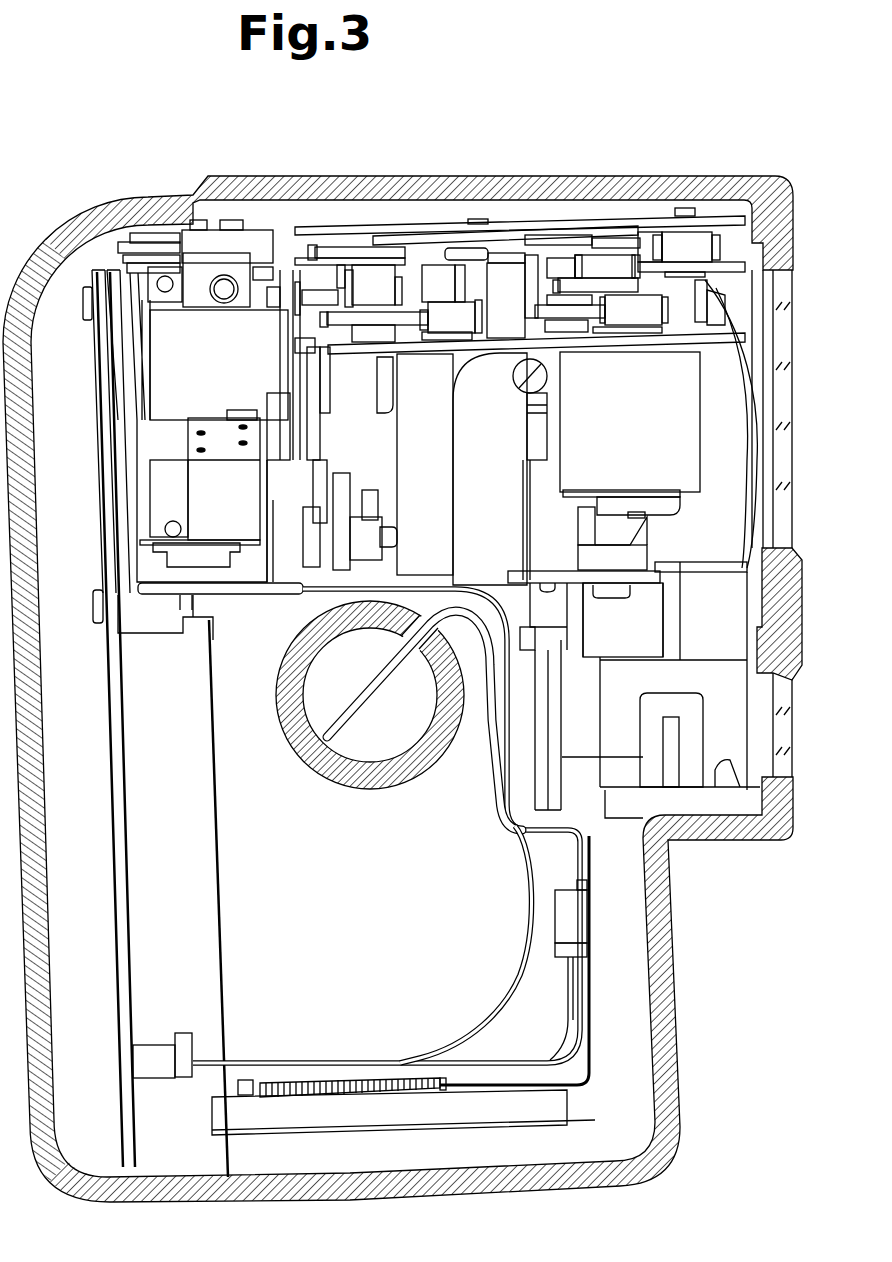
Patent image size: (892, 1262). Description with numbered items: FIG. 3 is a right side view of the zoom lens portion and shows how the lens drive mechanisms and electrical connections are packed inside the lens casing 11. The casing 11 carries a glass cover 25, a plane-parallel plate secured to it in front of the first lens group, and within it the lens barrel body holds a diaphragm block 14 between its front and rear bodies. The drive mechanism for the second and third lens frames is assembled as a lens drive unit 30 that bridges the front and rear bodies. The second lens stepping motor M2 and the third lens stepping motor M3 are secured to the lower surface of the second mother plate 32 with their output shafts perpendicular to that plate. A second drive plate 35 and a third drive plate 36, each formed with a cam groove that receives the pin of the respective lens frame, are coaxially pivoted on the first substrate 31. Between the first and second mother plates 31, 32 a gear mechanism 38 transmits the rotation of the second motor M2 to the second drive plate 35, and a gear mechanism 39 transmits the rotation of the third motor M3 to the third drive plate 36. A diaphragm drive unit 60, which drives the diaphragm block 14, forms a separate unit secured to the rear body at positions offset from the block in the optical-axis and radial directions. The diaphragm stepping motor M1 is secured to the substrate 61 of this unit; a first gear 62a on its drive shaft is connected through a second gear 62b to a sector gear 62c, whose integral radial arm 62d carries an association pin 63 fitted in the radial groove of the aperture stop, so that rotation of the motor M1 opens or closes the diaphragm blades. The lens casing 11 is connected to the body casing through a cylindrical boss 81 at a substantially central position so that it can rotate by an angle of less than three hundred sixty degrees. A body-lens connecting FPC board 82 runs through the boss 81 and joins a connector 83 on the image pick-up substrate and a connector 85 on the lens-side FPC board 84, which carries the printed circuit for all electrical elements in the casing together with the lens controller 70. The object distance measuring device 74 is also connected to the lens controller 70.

The lens casing 11 is at (663, 1013).
The diaphragm block 14 is at (458, 285).
The glass cover (plane-parallel plate) 25 is at (785, 542).
The lens drive unit 30 is at (432, 220).
The first substrate (first mother plate) 31 is at (605, 223).
The second mother plate (substrate) 32 is at (733, 338).
The second drive plate 35 is at (402, 237).
The third drive plate 36 is at (340, 248).
The gear mechanism 38 is at (644, 247).
The gear mechanism 39 is at (312, 278).
The diaphragm drive unit 60 is at (168, 453).
The substrate 61 is at (293, 398).
The first gear 62a is at (318, 357).
The second gear 62b is at (320, 562).
The sector gear 62c is at (345, 582).
The radial arm 62d is at (417, 523).
The association pin 63 is at (330, 585).
The lens controller (CPU) 70 is at (372, 1070).
The object distance measuring device 74 is at (722, 742).
The cylindrical boss 81 is at (388, 789).
The body-lens connecting FPC board 82 is at (500, 1053).
The connector 83 is at (150, 1060).
The FPC board (lens side) 84 is at (470, 590).
The connector 85 is at (600, 925).
The diaphragm stepping motor (first motor) M1 is at (180, 388).
The second lens stepping motor (second motor) M2 is at (683, 405).
The third lens stepping motor (third motor) M3 is at (392, 503).